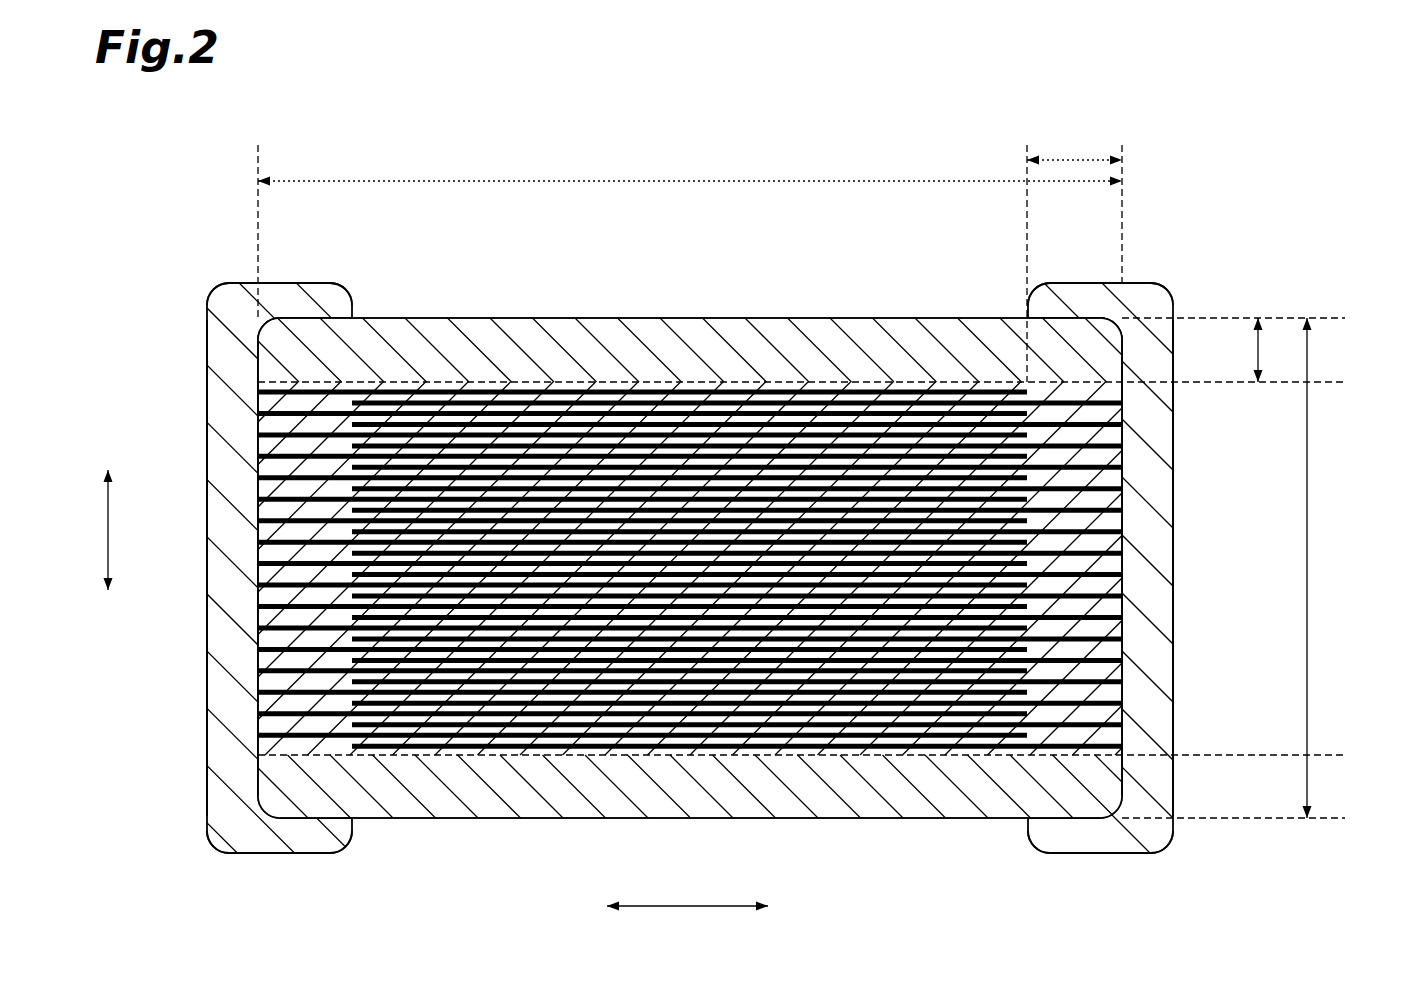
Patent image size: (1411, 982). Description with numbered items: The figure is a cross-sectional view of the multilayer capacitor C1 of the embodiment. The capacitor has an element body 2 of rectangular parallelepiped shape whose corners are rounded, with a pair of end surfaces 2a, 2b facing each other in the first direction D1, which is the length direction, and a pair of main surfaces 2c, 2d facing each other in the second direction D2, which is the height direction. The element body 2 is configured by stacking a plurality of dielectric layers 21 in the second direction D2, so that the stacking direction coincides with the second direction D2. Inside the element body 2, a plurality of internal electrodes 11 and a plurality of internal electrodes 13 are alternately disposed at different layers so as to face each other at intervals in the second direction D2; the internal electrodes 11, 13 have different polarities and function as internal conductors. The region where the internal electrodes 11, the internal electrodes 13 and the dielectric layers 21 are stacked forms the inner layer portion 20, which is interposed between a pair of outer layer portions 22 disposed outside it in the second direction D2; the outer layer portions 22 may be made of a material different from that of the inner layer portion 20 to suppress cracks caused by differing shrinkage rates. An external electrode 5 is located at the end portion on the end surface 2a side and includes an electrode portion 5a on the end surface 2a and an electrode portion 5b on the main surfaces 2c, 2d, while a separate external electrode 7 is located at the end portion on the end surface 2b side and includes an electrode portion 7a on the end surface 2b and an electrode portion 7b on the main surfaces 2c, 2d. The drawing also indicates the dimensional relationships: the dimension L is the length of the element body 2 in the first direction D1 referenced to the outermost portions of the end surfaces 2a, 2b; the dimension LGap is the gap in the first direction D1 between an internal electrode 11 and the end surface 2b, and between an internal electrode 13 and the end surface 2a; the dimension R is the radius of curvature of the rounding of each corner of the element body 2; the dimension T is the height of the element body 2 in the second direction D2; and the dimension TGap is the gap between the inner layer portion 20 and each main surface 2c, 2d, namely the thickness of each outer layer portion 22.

The element body 2 is at (705, 559).
The end surface 2a is at (258, 652).
The end surface 2b is at (1142, 630).
The main surface 2c is at (813, 318).
The main surface 2d is at (773, 820).
The external electrode 5 is at (433, 561).
The electrode portion 5a is at (229, 579).
The electrode portion 5b is at (301, 305).
The external electrode 7 is at (995, 569).
The electrode portion 7a is at (1150, 568).
The electrode portion 7b is at (1081, 305).
The internal electrode 11 is at (555, 392).
The internal electrode 13 is at (720, 424).
The inner layer portion 20 is at (705, 559).
The dielectric layer 21 is at (896, 412).
The outer layer portion 22 is at (1358, 318).
The multilayer capacitor C1 is at (1106, 270).
The dimension R is at (282, 345).
The dimension L is at (662, 179).
The dimension LGap is at (1068, 158).
The dimension T is at (1309, 568).
The dimension TGap is at (1259, 349).
The first direction D1 is at (680, 907).
The second direction D2 is at (113, 510).